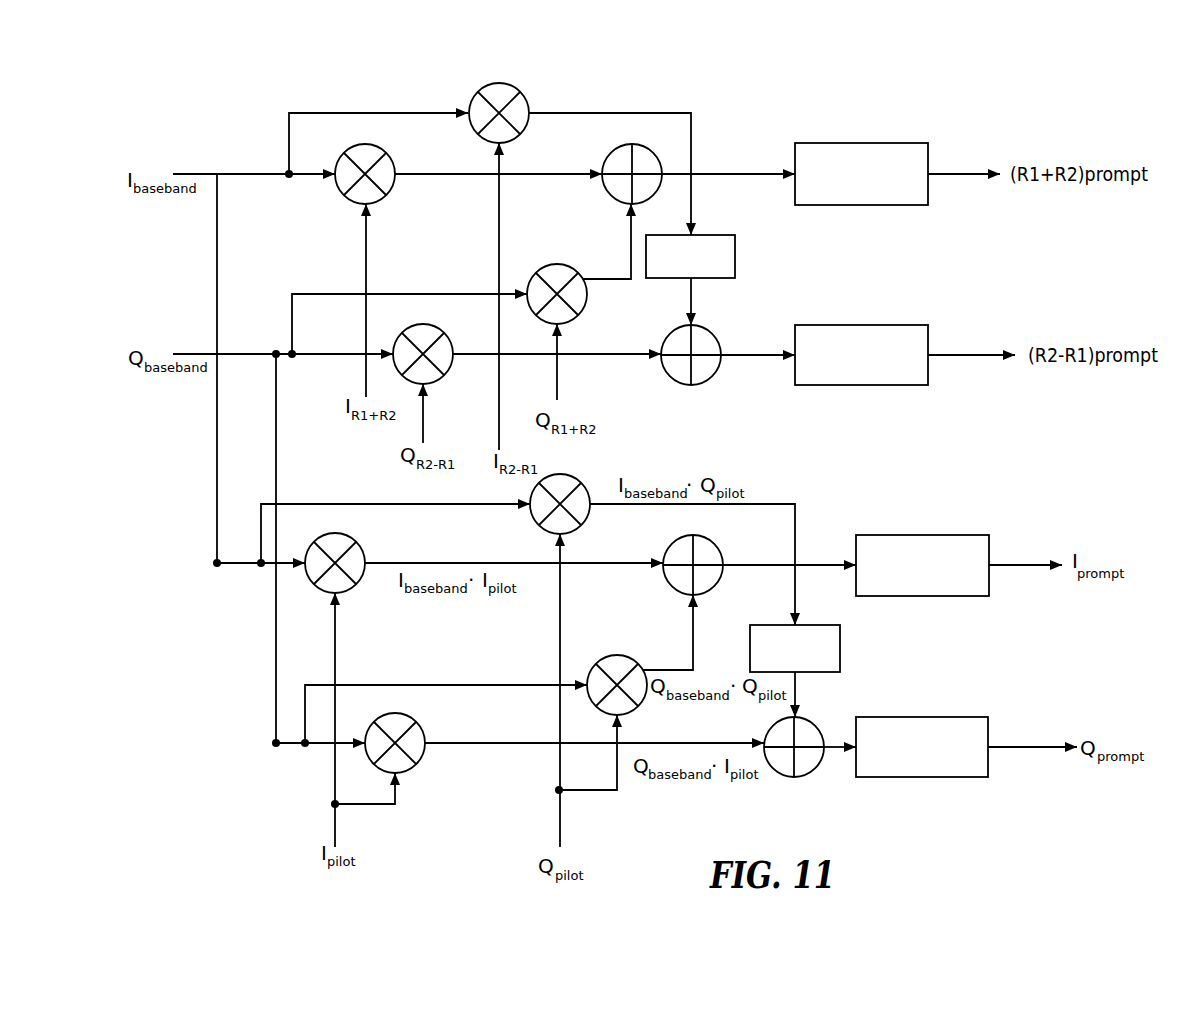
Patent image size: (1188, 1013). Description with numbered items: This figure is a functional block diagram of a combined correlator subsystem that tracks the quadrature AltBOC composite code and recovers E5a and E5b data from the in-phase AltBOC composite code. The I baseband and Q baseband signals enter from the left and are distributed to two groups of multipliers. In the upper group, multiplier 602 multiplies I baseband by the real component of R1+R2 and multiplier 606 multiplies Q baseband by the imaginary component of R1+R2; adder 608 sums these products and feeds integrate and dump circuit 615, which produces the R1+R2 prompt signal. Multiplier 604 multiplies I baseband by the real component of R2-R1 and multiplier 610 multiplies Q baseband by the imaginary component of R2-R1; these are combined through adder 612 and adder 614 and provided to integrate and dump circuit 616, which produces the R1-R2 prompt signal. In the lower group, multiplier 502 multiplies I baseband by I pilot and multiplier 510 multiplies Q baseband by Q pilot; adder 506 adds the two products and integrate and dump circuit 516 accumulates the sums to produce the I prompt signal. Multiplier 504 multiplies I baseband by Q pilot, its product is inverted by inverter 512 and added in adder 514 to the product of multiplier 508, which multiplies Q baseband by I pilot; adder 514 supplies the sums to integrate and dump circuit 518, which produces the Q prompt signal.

The multiplier 502 is at (334, 535).
The multiplier 504 is at (558, 477).
The adder 506 is at (718, 548).
The multiplier 508 is at (417, 767).
The multiplier 510 is at (613, 655).
The inverter 512 is at (842, 647).
The adder 514 is at (812, 725).
The integrate and dump circuit 516 is at (922, 535).
The integrate and dump circuit 518 is at (925, 717).
The multiplier 602 is at (363, 145).
The multiplier 604 is at (500, 85).
The multiplier 606 is at (548, 263).
The adder 608 is at (654, 159).
The multiplier 610 is at (445, 378).
The adder 612 is at (737, 255).
The adder 614 is at (713, 333).
The integrate and dump circuit 615 is at (860, 143).
The integrate and dump circuit 616 is at (862, 323).